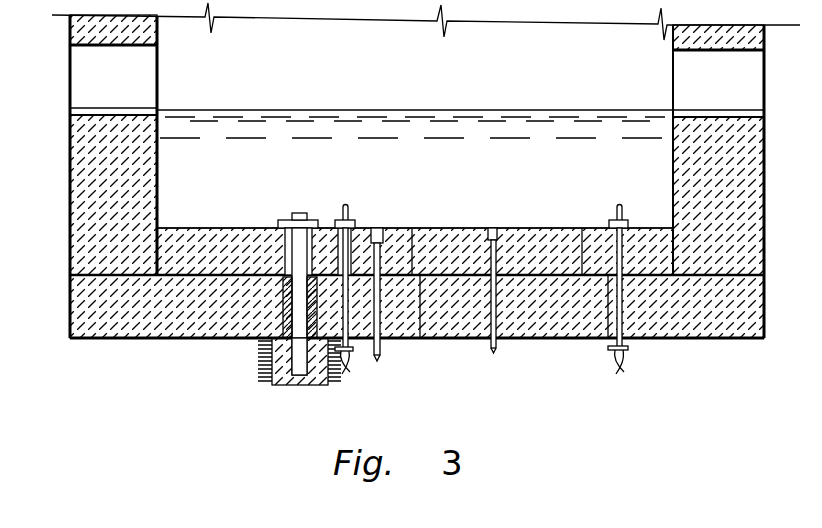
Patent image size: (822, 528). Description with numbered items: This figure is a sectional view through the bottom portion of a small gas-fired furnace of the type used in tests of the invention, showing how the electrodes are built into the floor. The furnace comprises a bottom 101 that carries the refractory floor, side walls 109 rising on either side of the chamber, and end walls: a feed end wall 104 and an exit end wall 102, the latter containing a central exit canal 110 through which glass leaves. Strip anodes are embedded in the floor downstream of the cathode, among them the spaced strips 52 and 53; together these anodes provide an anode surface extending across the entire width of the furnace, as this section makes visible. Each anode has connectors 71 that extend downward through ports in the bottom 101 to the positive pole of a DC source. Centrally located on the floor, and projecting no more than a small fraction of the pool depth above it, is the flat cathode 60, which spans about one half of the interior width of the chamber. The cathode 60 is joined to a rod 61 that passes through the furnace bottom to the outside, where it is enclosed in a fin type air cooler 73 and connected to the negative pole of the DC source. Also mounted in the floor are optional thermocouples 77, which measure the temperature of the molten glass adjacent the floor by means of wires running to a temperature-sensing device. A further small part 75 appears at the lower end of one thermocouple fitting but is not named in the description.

The bottom 101 is at (720, 340).
The exit end wall 102 is at (764, 155).
The feed end wall 104 is at (70, 173).
The side walls 109 is at (408, 76).
The exit canal 110 is at (753, 72).
The anode strip 52 is at (383, 228).
The anode strip 53 is at (494, 228).
The cathode 60 is at (295, 271).
The rod 61 is at (296, 240).
The connectors 71 is at (380, 354).
The fin type air cooler 73 is at (289, 386).
The retaining clip 75 is at (350, 352).
The thermocouples 77 is at (352, 208).